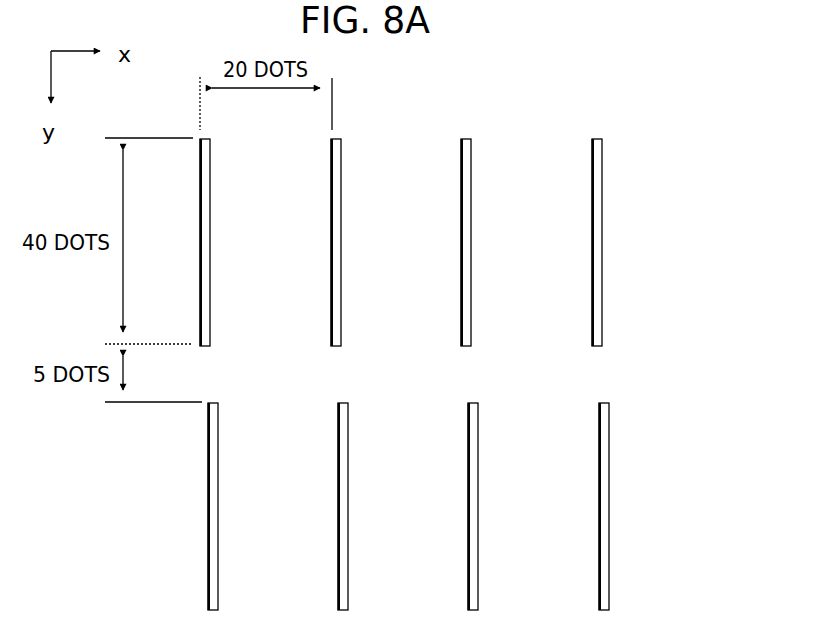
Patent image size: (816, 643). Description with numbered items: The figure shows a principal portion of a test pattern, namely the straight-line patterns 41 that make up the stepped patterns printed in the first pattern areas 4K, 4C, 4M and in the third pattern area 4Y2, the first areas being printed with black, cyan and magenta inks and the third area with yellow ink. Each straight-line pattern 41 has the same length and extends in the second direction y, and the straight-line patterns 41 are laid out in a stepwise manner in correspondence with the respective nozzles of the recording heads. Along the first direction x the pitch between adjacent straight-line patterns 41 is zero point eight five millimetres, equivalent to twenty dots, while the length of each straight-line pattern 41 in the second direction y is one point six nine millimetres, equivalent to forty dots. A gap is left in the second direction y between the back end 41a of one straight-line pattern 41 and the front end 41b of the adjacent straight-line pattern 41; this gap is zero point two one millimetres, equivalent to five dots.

The straight-line pattern 41 is at (602, 183).
The back end 41a is at (210, 347).
The front end 41b is at (217, 402).
The first pattern area 4K is at (467, 374).
The first pattern area 4C is at (467, 374).
The first pattern area 4M is at (467, 374).
The third pattern area 4Y2 is at (467, 374).